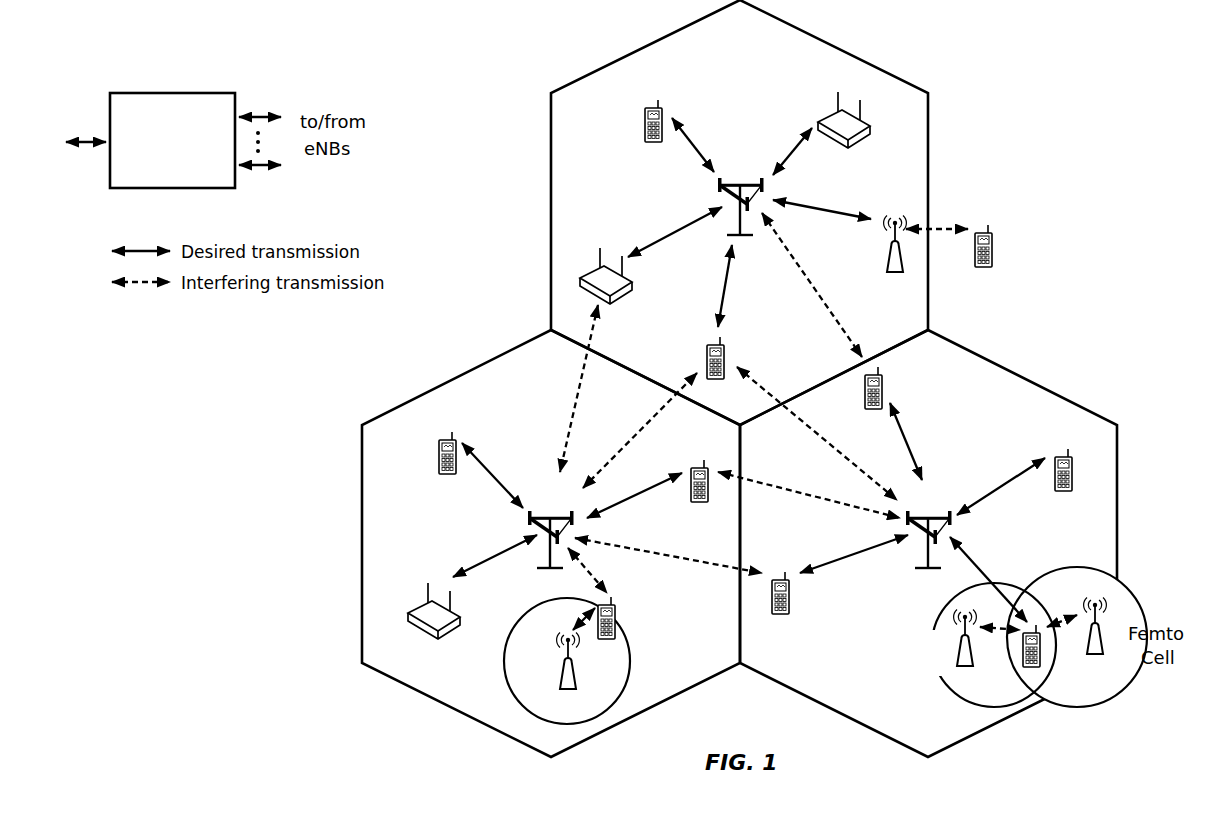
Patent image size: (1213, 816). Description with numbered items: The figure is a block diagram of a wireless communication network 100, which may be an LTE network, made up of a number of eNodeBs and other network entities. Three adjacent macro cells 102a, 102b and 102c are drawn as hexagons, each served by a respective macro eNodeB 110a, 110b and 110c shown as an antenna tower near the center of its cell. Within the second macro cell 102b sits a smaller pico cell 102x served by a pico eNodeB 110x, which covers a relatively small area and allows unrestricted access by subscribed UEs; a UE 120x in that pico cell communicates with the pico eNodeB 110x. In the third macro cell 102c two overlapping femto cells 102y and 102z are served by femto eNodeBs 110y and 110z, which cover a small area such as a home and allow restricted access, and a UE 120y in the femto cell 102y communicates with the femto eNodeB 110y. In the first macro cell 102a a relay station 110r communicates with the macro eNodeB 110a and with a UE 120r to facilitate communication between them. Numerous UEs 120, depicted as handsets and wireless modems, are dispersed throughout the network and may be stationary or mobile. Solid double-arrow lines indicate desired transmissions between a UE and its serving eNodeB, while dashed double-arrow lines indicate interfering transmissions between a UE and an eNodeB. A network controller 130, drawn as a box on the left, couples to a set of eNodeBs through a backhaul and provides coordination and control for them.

The wireless communication network 100 is at (1060, 59).
The macro cell 102a is at (847, 35).
The macro cell 102b is at (476, 368).
The macro cell 102c is at (1036, 361).
The pico cell 102x is at (522, 612).
The femto cell 102y is at (937, 612).
The femto cell 102z is at (1085, 556).
The macro eNodeB 110a is at (744, 170).
The macro eNodeB 110b is at (556, 503).
The macro eNodeB 110c is at (938, 503).
The relay station 110r is at (886, 262).
The pico eNodeB 110x is at (577, 688).
The femto eNodeB 110y is at (973, 664).
The femto eNodeB 110z is at (1103, 652).
The UE 120 is at (645, 115).
The UE 120r is at (993, 260).
The UE 120x is at (629, 604).
The UE 120y is at (1023, 668).
The network controller 130 is at (168, 92).